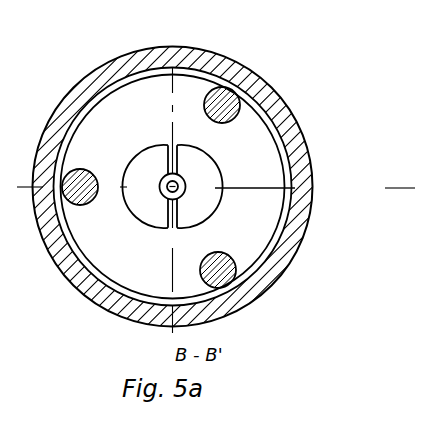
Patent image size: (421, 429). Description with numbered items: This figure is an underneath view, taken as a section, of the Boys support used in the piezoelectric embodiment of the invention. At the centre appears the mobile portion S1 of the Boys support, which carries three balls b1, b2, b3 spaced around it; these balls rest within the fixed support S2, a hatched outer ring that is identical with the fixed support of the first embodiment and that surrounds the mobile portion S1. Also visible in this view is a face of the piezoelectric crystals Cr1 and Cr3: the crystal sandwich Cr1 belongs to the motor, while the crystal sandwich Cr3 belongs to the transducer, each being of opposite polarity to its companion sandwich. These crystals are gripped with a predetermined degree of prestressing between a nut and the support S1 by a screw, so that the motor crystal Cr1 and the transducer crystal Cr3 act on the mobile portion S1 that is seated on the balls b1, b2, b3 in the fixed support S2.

The ball b1 is at (246, 94).
The ball b2 is at (252, 270).
The ball b3 is at (91, 199).
The mobile portion of the Boys support S1 is at (212, 187).
The fixed support S2 is at (210, 185).
The piezoelectric crystal sandwich Cr1 is at (243, 175).
The piezoelectric crystal sandwich Cr3 is at (131, 172).